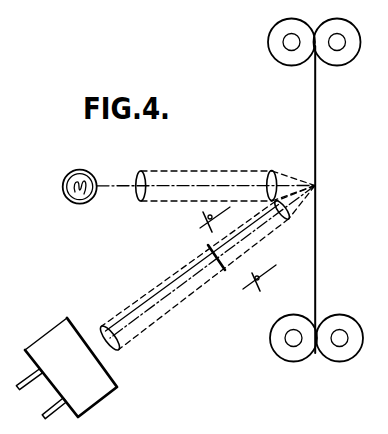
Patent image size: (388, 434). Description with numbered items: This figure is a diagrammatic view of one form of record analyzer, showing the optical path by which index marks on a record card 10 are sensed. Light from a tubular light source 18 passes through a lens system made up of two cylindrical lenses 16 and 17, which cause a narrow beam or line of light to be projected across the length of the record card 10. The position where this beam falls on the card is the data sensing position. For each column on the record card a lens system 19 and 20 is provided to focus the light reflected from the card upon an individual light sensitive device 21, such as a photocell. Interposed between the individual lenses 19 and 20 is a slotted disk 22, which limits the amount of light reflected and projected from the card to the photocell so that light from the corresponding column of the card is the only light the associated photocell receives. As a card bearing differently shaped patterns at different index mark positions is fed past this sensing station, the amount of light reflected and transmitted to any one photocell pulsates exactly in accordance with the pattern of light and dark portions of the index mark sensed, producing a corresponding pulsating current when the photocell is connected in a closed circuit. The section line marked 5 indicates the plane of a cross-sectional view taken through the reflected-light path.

The record card 10 is at (315, 95).
The cylindrical lens 16 is at (272, 180).
The cylindrical lens 17 is at (140, 176).
The tubular light source 18 is at (82, 170).
The lens 19 is at (287, 212).
The lens 20 is at (113, 350).
The light sensitive device 21 is at (63, 333).
The slotted disk 22 is at (216, 264).
The section line 5- 5 is at (231, 253).